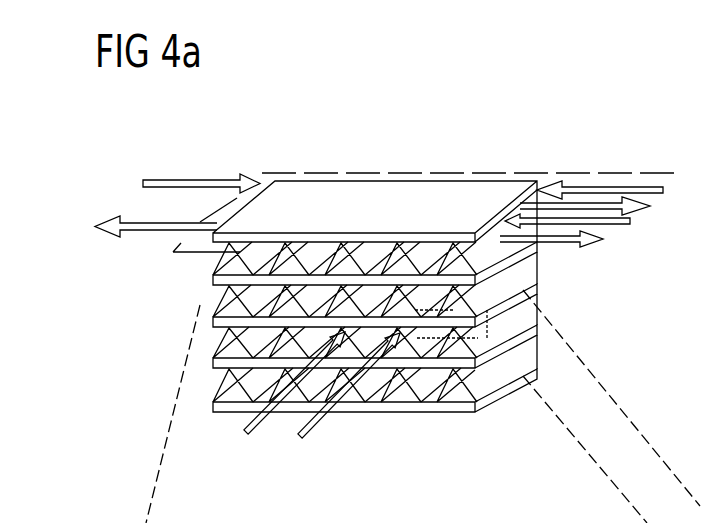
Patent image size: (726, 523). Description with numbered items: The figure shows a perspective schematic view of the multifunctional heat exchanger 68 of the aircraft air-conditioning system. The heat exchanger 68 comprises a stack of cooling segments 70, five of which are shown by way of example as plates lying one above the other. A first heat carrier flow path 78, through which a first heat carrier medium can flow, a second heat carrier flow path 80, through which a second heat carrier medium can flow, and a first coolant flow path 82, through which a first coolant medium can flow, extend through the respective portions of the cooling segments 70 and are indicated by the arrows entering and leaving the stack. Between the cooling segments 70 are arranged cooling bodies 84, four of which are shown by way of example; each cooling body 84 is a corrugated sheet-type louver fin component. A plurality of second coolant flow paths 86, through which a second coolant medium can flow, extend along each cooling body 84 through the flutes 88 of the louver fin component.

The heat exchanger 68 is at (424, 129).
The cooling segment 70 is at (343, 190).
The first heat carrier flow path 78 is at (163, 223).
The second heat carrier flow path 80 is at (657, 195).
The first coolant flow path 82 is at (597, 210).
The cooling body 84 is at (222, 338).
The second coolant flow path 86 is at (300, 440).
The flute 88 is at (234, 394).